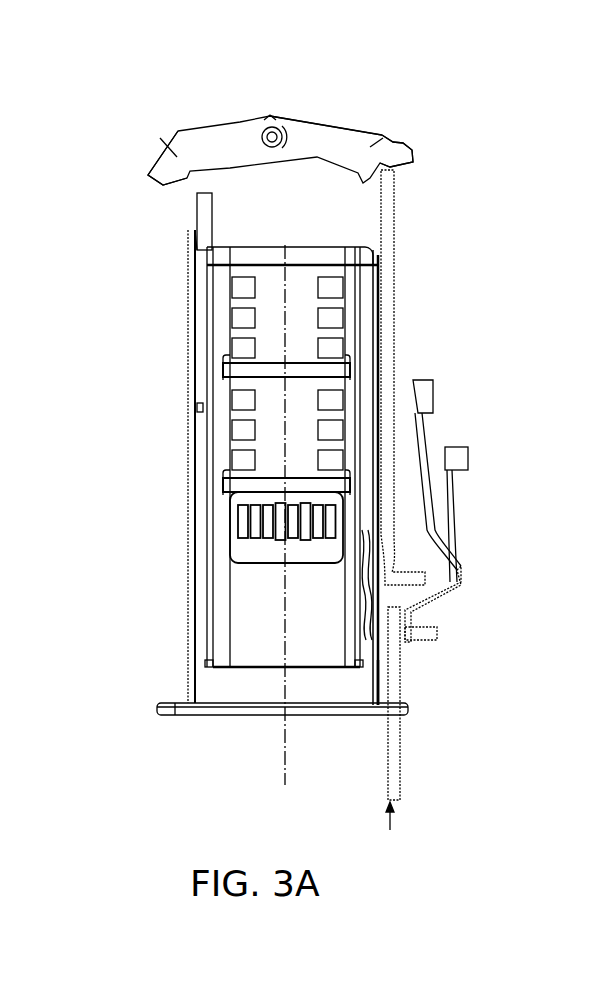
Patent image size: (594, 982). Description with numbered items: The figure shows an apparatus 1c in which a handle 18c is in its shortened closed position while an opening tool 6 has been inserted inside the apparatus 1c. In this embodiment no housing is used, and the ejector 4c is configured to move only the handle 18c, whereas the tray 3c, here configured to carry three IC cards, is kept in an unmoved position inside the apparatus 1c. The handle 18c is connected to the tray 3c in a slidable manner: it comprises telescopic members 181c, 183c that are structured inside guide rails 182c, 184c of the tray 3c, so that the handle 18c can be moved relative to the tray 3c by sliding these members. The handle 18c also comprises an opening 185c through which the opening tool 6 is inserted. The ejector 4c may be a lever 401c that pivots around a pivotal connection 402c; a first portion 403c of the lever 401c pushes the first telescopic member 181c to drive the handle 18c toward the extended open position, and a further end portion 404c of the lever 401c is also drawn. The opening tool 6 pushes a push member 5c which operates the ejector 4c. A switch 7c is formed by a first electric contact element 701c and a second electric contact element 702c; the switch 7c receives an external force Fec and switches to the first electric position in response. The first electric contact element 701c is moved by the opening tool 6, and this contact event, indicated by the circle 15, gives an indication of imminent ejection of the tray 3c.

The apparatus 1c is at (112, 150).
The tray 3c is at (262, 752).
The ejector 4c is at (272, 172).
The lever 401c is at (337, 128).
The pivotal connection 402c is at (243, 122).
The first portion of the lever 403c is at (178, 158).
The crank lever right end 404c is at (397, 142).
The push member 5c is at (390, 334).
The opening tool 6 is at (408, 720).
The switch 7c is at (473, 511).
The first electric contact element 701c is at (453, 545).
The second electric contact element 702c is at (467, 468).
The circle 15 is at (420, 620).
The handle 18c is at (228, 716).
The first telescopic member 181c is at (203, 215).
The guide rail 182c is at (197, 407).
The telescopic member 183c is at (378, 650).
The guide rail 184c is at (378, 312).
The opening 185c is at (400, 706).
The external force Fec is at (387, 830).